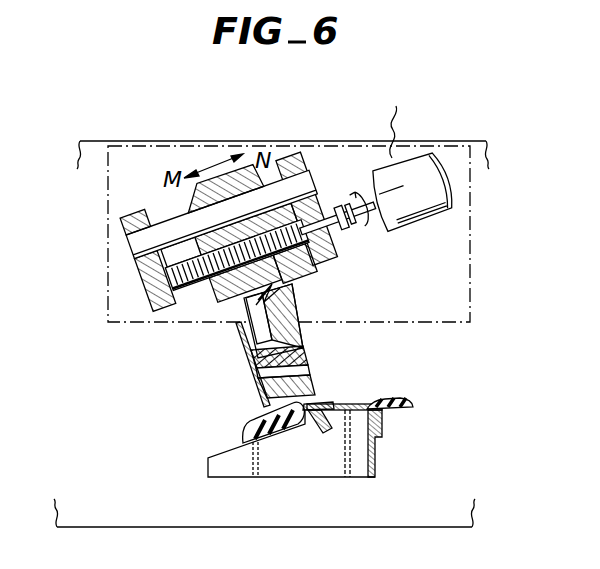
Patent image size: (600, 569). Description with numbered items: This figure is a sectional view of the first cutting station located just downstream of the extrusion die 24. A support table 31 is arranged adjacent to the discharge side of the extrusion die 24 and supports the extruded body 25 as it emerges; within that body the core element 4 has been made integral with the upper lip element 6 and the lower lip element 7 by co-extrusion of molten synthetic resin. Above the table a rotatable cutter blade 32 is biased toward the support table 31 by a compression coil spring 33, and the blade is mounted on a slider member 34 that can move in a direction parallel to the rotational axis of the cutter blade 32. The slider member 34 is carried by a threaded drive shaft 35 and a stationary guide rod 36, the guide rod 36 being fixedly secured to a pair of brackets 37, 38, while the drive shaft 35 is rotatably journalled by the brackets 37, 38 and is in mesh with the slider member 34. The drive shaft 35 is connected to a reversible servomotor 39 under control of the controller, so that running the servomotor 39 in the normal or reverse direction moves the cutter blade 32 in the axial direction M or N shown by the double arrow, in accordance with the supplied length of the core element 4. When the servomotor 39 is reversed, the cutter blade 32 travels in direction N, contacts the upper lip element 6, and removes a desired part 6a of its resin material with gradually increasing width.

The core element 4 is at (377, 454).
The upper lip element 6 is at (323, 406).
The removed part of upper lip element 6a is at (250, 426).
The lower lip element 7 is at (413, 407).
The extrusion die 24 is at (347, 527).
The extruded body 25 is at (352, 400).
The support table 31 is at (300, 465).
The cutter blade 32 is at (238, 328).
The compression coil spring 33 is at (240, 300).
The slider member 34 is at (220, 182).
The threaded drive shaft 35 is at (305, 250).
The stationary guide rod 36 is at (153, 213).
The bracket 37 is at (128, 270).
The bracket 38 is at (337, 251).
The reversible servomotor 39 is at (452, 201).